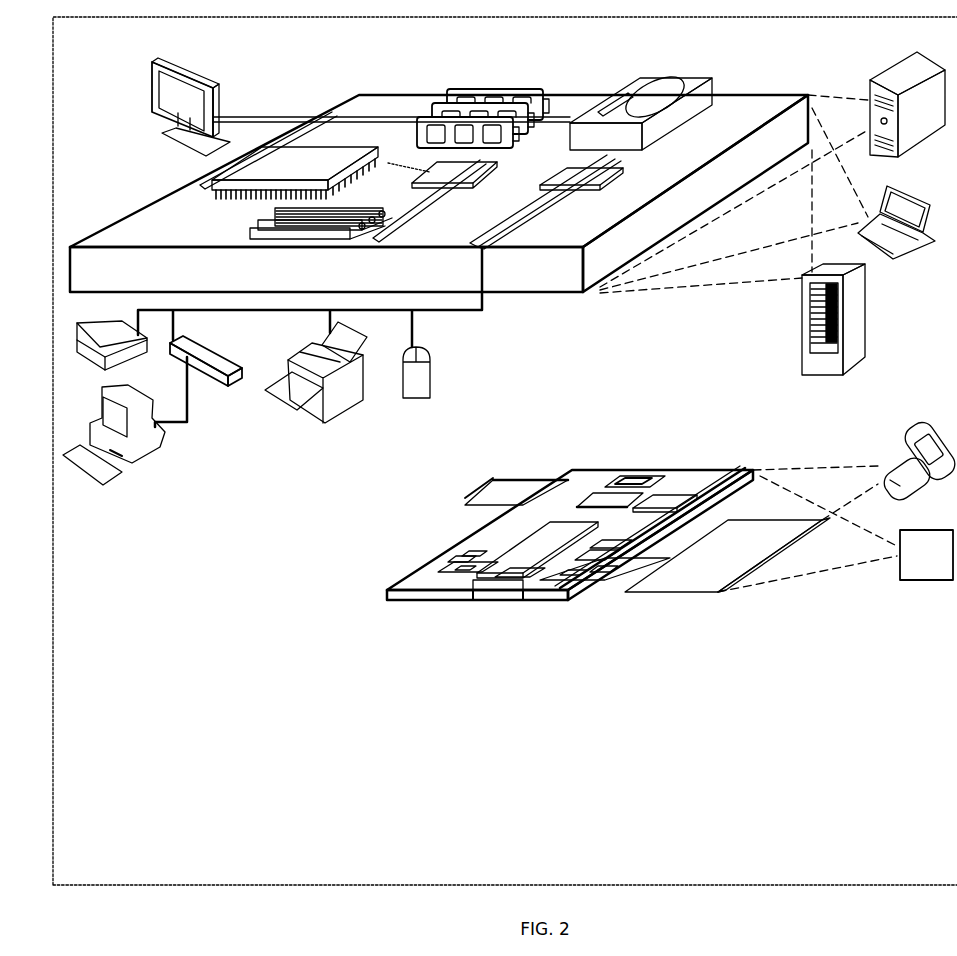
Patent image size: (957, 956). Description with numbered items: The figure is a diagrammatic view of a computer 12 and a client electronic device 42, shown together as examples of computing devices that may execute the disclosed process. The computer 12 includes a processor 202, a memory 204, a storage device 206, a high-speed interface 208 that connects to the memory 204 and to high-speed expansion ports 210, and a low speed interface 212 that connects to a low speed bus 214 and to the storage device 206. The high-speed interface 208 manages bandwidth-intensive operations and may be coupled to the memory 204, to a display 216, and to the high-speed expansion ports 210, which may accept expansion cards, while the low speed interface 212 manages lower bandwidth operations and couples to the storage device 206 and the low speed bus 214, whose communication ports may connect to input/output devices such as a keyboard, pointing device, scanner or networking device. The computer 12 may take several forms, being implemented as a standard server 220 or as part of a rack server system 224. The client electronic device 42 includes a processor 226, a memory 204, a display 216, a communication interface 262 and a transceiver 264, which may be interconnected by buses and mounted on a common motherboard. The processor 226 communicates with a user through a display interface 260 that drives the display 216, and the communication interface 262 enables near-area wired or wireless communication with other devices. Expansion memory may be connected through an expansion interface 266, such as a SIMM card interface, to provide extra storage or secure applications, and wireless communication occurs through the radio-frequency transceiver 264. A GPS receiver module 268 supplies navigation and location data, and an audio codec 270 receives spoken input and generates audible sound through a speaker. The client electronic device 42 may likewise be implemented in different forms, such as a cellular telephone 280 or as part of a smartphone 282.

The computer 12 is at (304, 72).
The client electronic device 42 is at (551, 452).
The processor 202 is at (210, 185).
The memory 204 is at (462, 90).
The storage device 206 is at (633, 78).
The high-speed interface 208 is at (388, 158).
The high-speed expansion ports 210 is at (270, 222).
The low speed interface 212 is at (578, 178).
The low speed bus 214 is at (487, 250).
The display 216 is at (153, 62).
The standard server 220 is at (870, 82).
The rack server system 224 is at (802, 330).
The processor 226 is at (513, 590).
The display interface 260 is at (606, 588).
The communication interface 262 is at (610, 500).
The transceiver 264 is at (495, 483).
The expansion interface 266 is at (550, 484).
The GPS receiver module 268 is at (646, 480).
The audio codec 270 is at (628, 592).
The cellular telephone 280 is at (936, 428).
The smartphone 282 is at (910, 530).